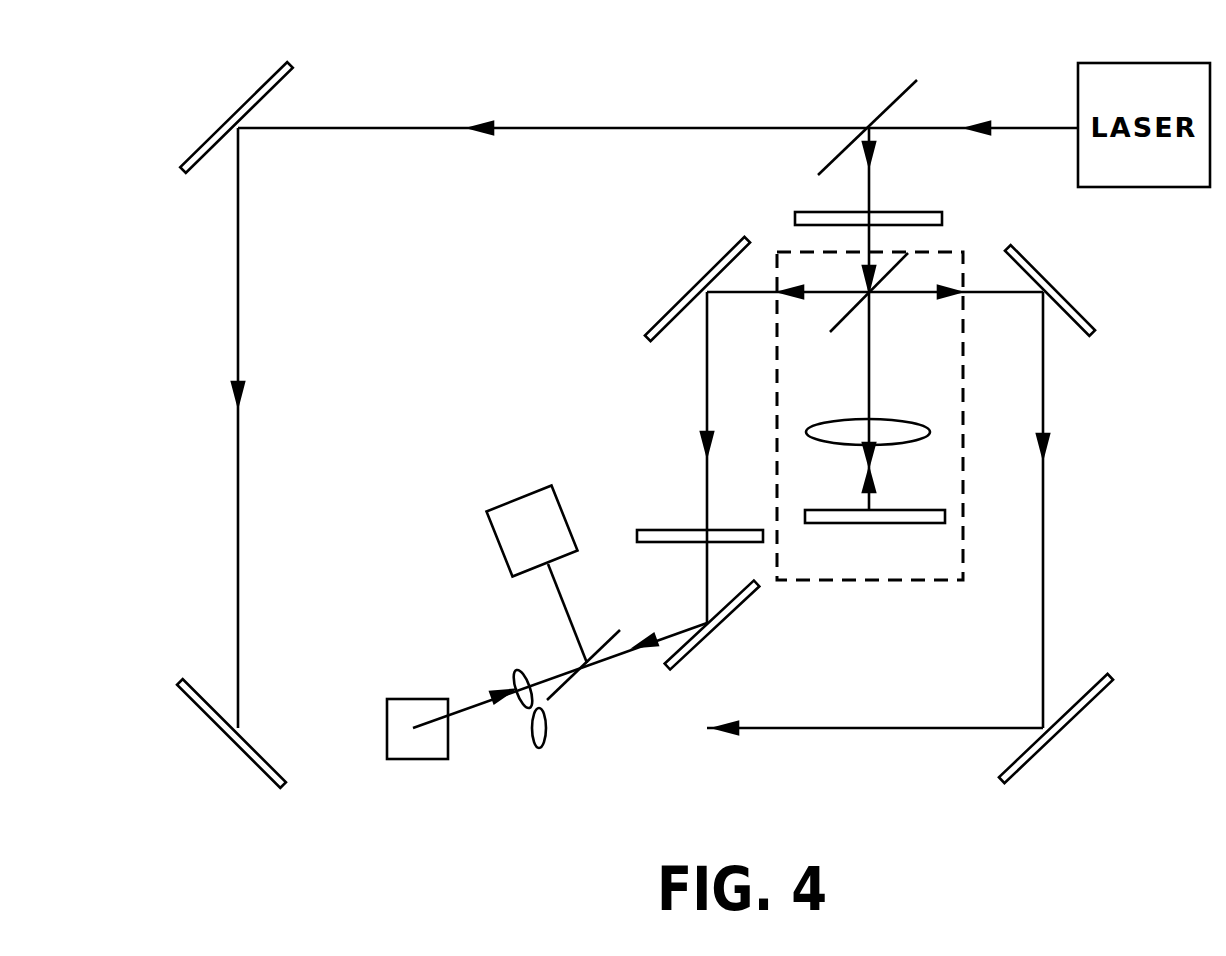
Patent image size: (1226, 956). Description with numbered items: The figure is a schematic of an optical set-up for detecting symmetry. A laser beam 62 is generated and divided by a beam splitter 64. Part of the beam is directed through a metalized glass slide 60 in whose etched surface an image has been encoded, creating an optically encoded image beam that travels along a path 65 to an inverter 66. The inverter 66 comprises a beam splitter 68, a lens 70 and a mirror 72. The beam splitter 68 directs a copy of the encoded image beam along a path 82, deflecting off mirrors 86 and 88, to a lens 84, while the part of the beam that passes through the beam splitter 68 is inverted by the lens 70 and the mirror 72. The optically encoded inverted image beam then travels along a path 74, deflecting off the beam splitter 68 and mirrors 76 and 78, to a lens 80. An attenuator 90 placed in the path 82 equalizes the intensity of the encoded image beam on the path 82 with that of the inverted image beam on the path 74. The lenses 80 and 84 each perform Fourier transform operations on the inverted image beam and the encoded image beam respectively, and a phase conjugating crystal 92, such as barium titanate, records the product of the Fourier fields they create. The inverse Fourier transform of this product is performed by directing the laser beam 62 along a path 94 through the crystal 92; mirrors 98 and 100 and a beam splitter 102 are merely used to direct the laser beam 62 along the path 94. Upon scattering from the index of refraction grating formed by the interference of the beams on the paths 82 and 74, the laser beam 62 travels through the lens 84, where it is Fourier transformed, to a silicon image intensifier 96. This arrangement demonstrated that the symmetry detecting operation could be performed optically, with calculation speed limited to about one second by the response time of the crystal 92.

The metalized glass slide 60 is at (795, 220).
The laser beam 62 is at (985, 126).
The beam splitter 64 is at (888, 102).
The path 65 is at (896, 262).
The inverter 66 is at (877, 581).
The beam splitter 68 is at (830, 332).
The lens 70 is at (910, 402).
The mirror 72 is at (875, 524).
The path 74 is at (950, 300).
The mirror 76 is at (1046, 276).
The mirror 78 is at (1035, 755).
The lens 80 is at (545, 746).
The path 82 is at (788, 303).
The lens 84 is at (520, 672).
The mirror 86 is at (700, 292).
The mirror 88 is at (712, 641).
The attenuator 90 is at (668, 530).
The phase conjugating crystal 92 is at (400, 698).
The path 94 is at (485, 126).
The silicon image intensifier 96 is at (537, 574).
The mirror 98 is at (288, 78).
The mirror 100 is at (330, 772).
The beam splitter 102 is at (578, 680).